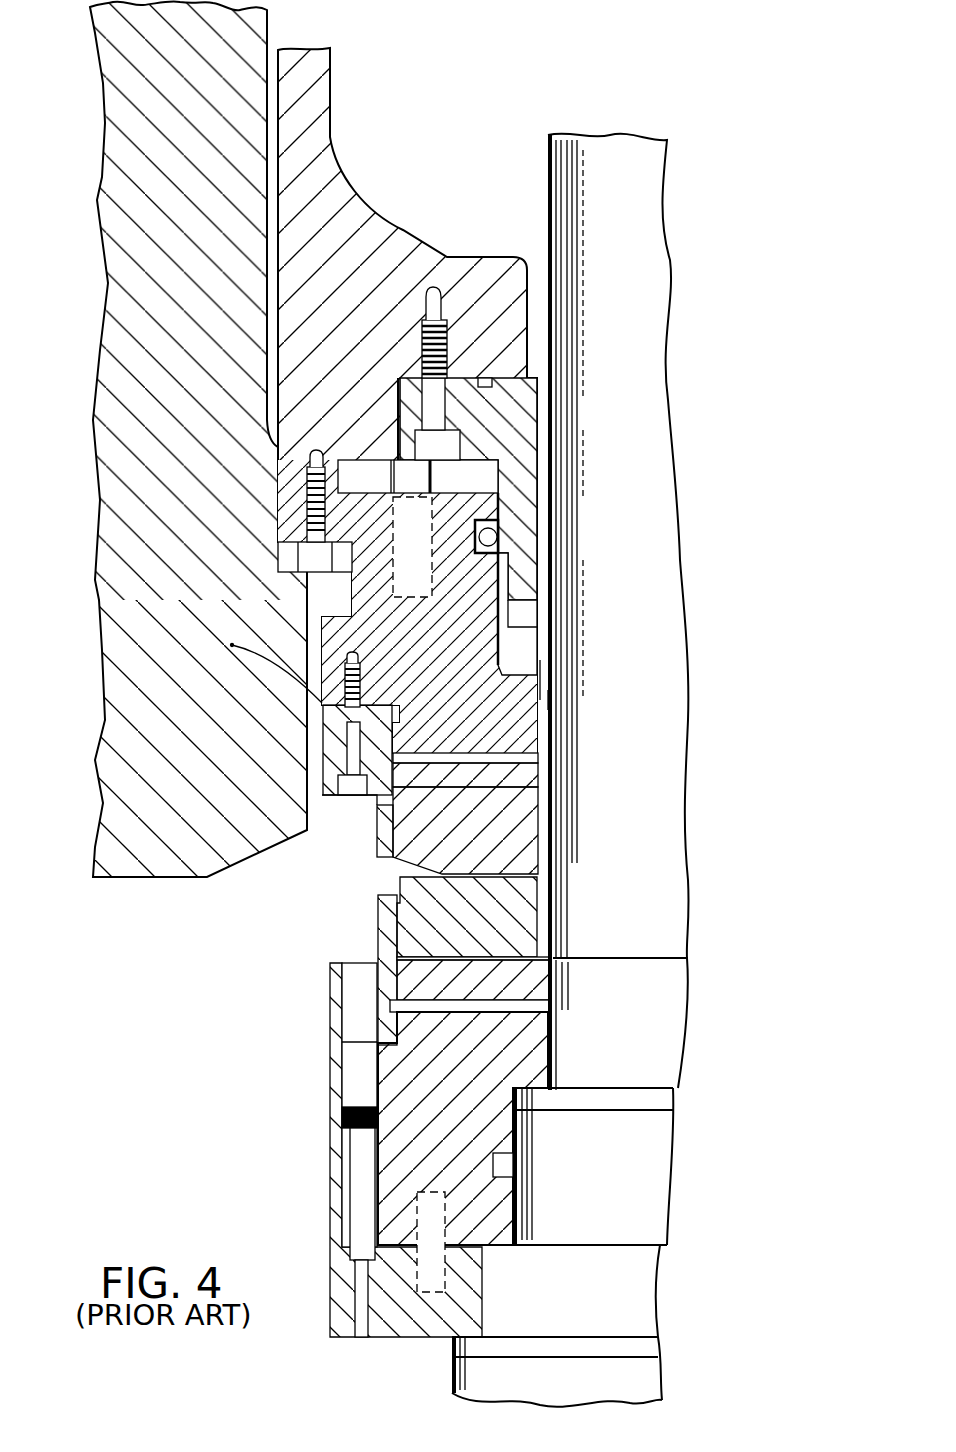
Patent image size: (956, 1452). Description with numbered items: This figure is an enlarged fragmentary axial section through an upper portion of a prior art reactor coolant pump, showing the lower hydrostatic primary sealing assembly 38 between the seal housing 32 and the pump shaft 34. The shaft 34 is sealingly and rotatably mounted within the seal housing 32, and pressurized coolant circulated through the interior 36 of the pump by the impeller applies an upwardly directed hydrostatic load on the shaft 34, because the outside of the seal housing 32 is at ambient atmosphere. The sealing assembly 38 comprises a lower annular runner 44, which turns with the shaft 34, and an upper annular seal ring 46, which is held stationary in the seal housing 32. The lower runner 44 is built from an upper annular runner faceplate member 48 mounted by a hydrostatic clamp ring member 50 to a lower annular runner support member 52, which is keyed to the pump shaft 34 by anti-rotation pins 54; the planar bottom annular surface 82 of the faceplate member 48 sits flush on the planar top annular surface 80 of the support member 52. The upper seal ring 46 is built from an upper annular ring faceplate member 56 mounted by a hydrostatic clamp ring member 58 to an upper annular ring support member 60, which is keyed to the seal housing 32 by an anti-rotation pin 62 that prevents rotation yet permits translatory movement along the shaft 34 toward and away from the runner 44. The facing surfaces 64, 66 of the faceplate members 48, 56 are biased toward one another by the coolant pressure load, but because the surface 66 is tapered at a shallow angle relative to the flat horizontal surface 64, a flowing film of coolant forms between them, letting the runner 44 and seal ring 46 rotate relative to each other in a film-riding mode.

The seal housing 32 is at (128, 745).
The pump shaft 34 is at (645, 320).
The interior 36 is at (196, 1043).
The lower hydrostatic primary sealing assembly 38 is at (598, 680).
The lower annular runner 44 is at (582, 983).
The upper annular seal ring 46 is at (587, 700).
The upper annular runner faceplate member 48 is at (523, 893).
The hydrostatic clamp ring member 50 is at (377, 913).
The lower annular runner base or support member 52 is at (423, 1161).
The anti-rotation pins 54 is at (420, 1215).
The upper annular ring faceplate member 56 is at (520, 817).
The hydrostatic clamp ring member 58 is at (377, 823).
The upper annular ring base or support member 60 is at (478, 633).
The anti-rotation pin 62 is at (393, 478).
The top surface 64 is at (513, 860).
The bottom surface 66 is at (470, 880).
The top annular surface 80 is at (487, 947).
The bottom annular surface 82 is at (470, 877).